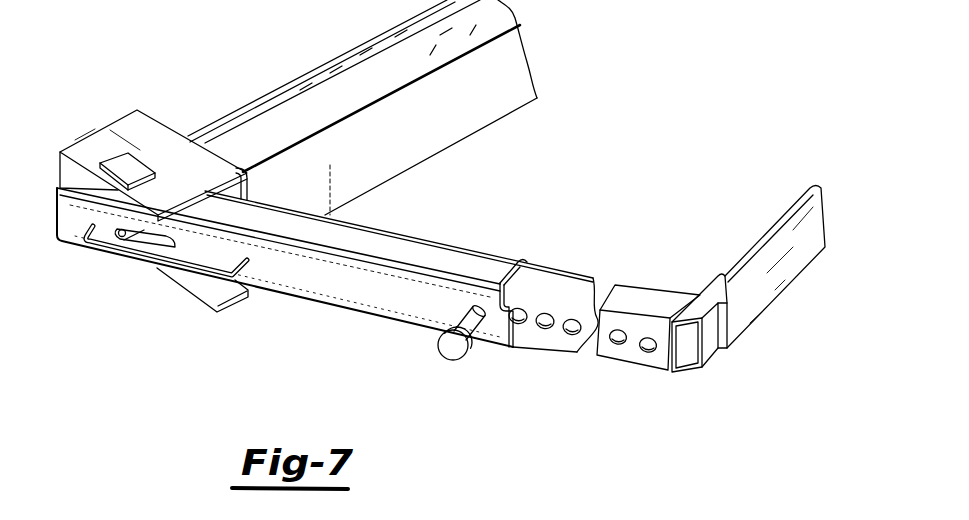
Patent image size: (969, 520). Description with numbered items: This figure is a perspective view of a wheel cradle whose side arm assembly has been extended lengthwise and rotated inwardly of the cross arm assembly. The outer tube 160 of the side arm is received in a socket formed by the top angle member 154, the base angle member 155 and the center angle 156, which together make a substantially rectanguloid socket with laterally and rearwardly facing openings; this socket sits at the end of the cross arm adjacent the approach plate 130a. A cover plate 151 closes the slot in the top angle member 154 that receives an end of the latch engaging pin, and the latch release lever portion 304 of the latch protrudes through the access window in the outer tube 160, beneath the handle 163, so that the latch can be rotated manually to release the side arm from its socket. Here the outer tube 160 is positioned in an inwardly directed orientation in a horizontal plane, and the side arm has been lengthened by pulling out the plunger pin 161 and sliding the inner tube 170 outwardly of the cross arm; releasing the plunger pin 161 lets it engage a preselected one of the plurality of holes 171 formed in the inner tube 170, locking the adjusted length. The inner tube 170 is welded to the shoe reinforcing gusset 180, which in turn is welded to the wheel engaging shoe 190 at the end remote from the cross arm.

The approach plate 130a is at (523, 68).
The cover plate 151 is at (143, 165).
The top angle member 154 is at (153, 139).
The base angle member 155 is at (238, 298).
The center angle 156 is at (67, 172).
The outer tube 160 is at (348, 300).
The plunger pin 161 is at (452, 352).
The handle 163 is at (177, 272).
The inner tube 170 is at (401, 297).
The adjusting holes 171 is at (547, 323).
The shoe reinforcing gusset 180 is at (717, 348).
The wheel engaging shoe 190 is at (793, 203).
The latch release lever portion 304 is at (134, 249).